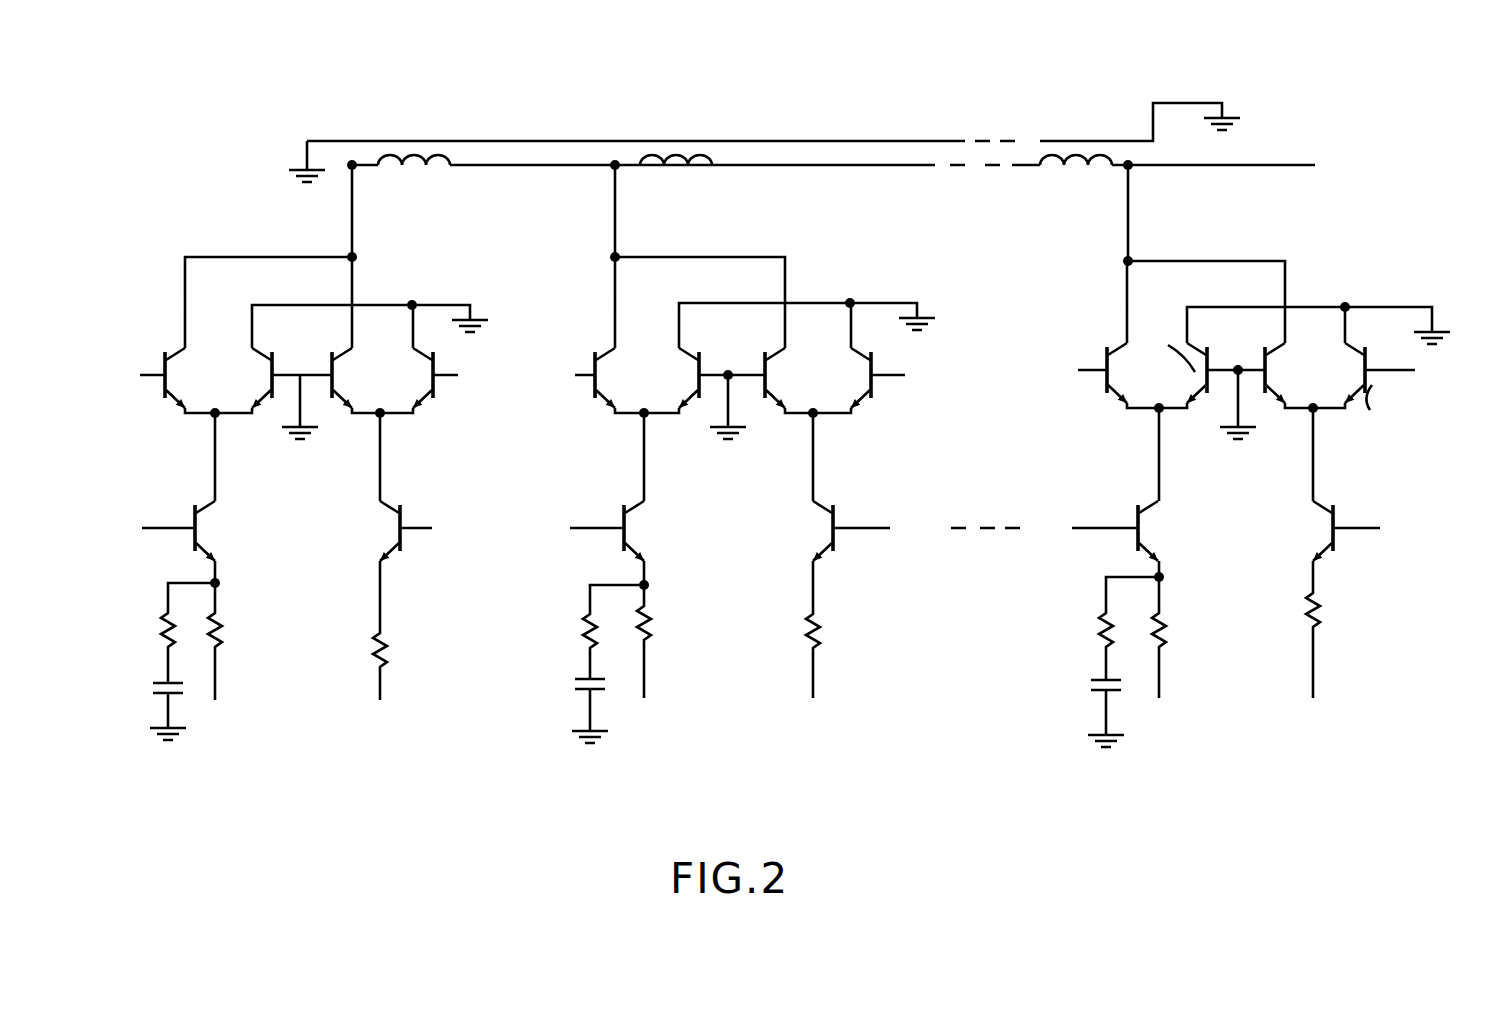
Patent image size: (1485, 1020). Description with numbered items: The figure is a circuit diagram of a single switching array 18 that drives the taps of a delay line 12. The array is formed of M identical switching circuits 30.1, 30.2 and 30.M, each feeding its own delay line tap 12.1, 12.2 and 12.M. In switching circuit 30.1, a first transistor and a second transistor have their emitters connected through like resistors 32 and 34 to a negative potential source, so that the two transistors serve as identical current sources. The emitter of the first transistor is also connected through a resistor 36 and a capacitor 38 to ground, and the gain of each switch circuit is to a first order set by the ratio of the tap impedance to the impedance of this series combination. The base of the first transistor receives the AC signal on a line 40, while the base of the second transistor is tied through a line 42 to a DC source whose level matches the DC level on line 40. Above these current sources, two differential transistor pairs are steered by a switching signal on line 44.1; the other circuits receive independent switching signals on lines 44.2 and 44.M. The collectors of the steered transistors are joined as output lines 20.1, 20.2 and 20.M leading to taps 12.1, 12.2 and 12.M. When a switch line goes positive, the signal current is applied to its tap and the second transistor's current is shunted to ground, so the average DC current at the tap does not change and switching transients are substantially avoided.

The delay line 12 is at (807, 164).
The delay line tap 12.1 is at (352, 162).
The delay line tap 12.2 is at (615, 162).
The delay line tap 12.M is at (1128, 163).
The switching array 18 is at (592, 766).
The output line 20.1 is at (353, 222).
The output line 20.2 is at (616, 218).
The output line 20.M is at (1130, 218).
The switching circuit 30.1 is at (309, 710).
The switching circuit 30.2 is at (752, 678).
The switching circuit 30.M is at (1250, 682).
The resistor 32 is at (223, 637).
The resistor 34 is at (372, 651).
The resistor 36 is at (162, 636).
The capacitor 38 is at (145, 690).
The line 40 is at (172, 532).
The line 42 is at (425, 530).
The line 44.1 is at (150, 382).
The line 44.2 is at (580, 382).
The line 44.M is at (1090, 377).